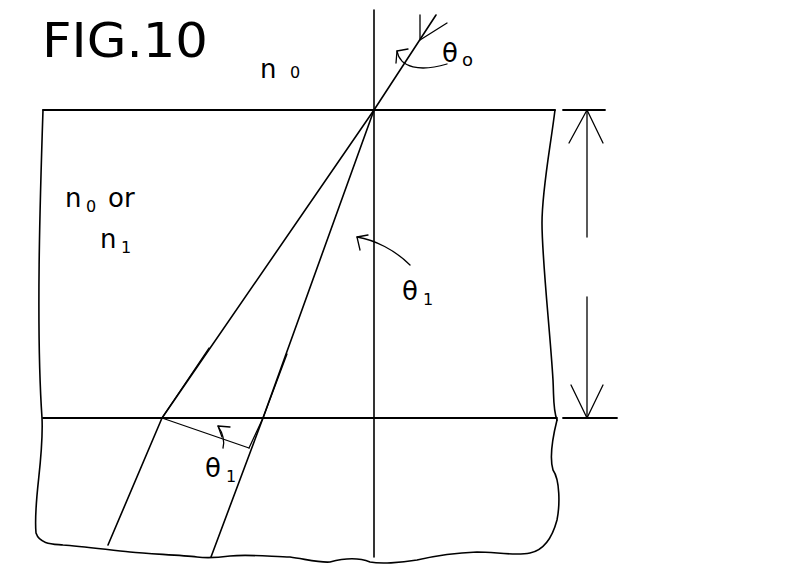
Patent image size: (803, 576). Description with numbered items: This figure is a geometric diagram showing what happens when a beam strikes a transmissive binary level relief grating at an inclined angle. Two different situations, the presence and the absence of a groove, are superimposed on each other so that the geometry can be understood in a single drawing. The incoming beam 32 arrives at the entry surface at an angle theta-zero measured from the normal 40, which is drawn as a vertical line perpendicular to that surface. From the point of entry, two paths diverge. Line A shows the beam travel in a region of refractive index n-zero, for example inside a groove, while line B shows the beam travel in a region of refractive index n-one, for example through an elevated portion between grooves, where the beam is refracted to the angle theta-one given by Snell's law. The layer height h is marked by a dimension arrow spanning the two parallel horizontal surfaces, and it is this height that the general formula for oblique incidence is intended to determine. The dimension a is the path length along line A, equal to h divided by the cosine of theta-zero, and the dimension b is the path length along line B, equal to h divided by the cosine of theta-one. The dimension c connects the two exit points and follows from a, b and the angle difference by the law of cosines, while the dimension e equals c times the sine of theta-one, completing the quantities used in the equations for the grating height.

The incoming beam 32 is at (436, 16).
The normal 40 is at (374, 68).
The line A is at (303, 213).
The line B is at (346, 192).
The dimension a is at (209, 348).
The dimension b is at (287, 354).
The dimension c is at (205, 418).
The dimension e is at (256, 436).
The height h is at (590, 264).